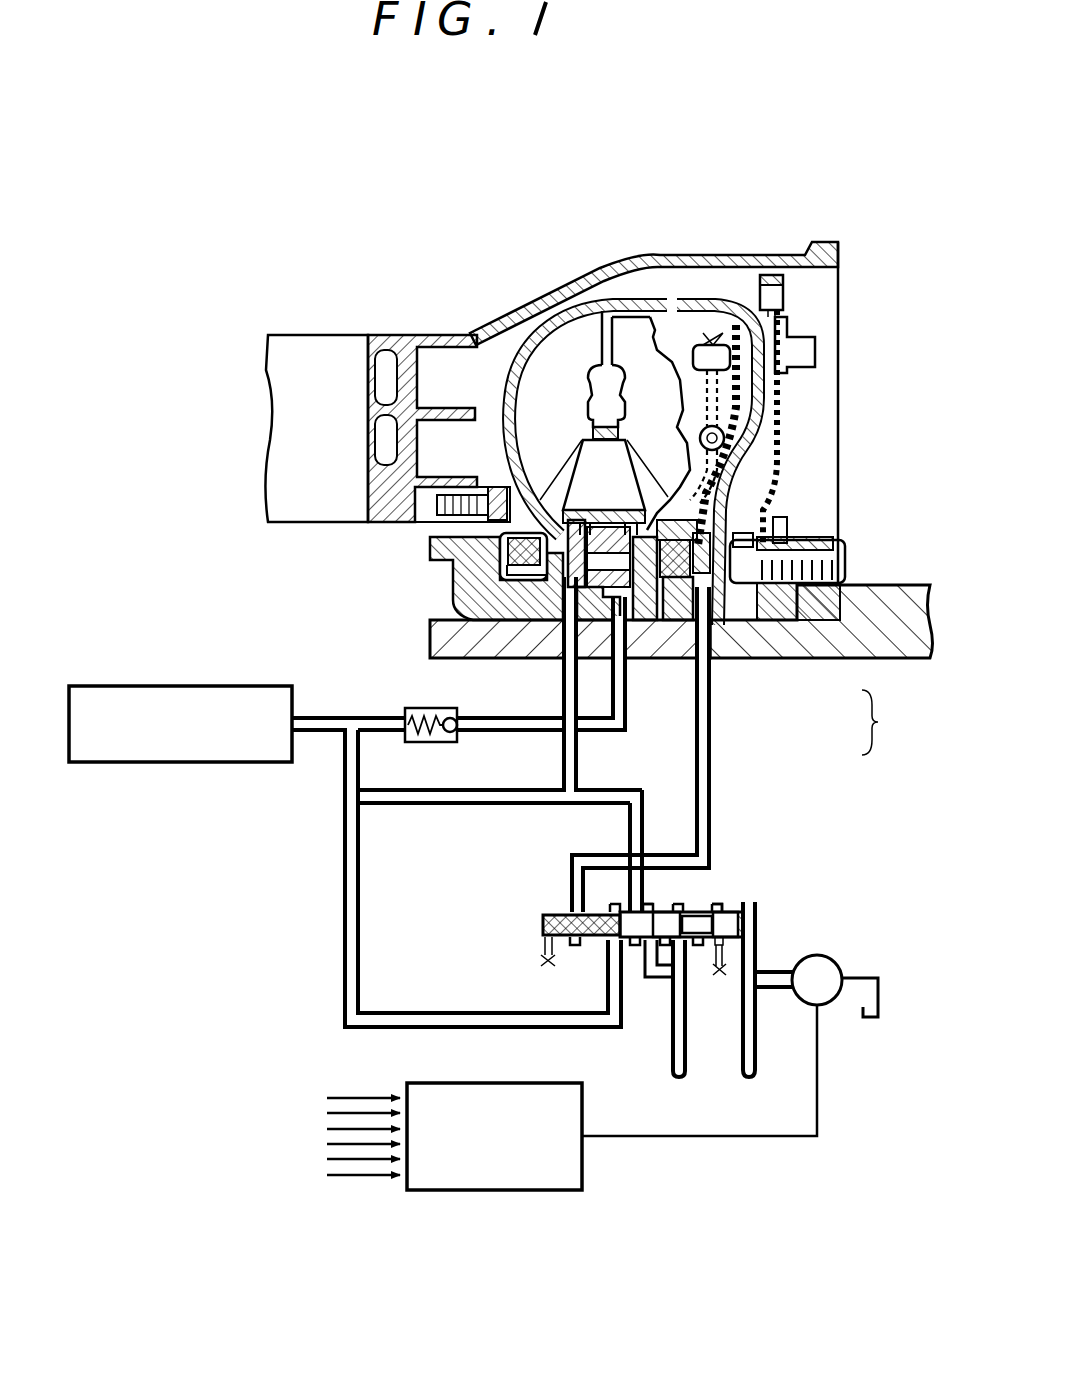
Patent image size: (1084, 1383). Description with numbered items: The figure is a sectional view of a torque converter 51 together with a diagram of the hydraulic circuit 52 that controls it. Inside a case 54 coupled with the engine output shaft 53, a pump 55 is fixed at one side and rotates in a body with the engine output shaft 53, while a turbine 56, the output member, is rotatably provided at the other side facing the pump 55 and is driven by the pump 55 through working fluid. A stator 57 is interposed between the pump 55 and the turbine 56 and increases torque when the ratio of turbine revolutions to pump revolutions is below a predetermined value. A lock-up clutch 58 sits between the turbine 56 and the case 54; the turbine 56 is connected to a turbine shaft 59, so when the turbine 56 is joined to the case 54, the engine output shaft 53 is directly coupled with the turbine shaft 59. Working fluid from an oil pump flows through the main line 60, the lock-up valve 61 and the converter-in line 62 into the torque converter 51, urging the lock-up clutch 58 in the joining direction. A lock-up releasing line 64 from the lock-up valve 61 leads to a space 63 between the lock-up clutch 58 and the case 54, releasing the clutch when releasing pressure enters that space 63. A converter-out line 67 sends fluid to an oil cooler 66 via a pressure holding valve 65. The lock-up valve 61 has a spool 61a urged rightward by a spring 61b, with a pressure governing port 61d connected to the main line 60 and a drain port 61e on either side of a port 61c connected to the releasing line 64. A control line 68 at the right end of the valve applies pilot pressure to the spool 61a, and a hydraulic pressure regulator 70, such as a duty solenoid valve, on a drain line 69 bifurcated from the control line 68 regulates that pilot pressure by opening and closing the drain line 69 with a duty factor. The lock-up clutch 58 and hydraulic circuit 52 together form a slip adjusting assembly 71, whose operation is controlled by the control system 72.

The torque converter 51 is at (703, 290).
The hydraulic circuit 52 is at (722, 777).
The engine output shaft 53 is at (885, 587).
The case 54 is at (637, 333).
The pump 55 is at (577, 347).
The turbine 56 is at (635, 333).
The stator 57 is at (590, 473).
The lock-up clutch 58 is at (770, 625).
The turbine shaft 59 is at (458, 660).
The main line 60 is at (668, 1060).
The lock-up valve 61 is at (658, 930).
The spool 61a is at (702, 875).
The spring 61b is at (545, 910).
The port 61c is at (712, 860).
The pressure governing port 61d is at (665, 978).
The drain port 61e is at (730, 950).
The converter-in line 62 is at (575, 763).
The space 63 is at (780, 477).
The lock-up releasing line 64 is at (702, 752).
The pressure holding valve 65 is at (433, 743).
The oil cooler 66 is at (157, 687).
The converter-out line 67 is at (625, 690).
The control line 68 is at (757, 1057).
The drain line 69 is at (778, 960).
The hydraulic pressure regulator 70 is at (850, 957).
The slip adjusting assembly 71 is at (894, 722).
The control system 72 is at (448, 1194).